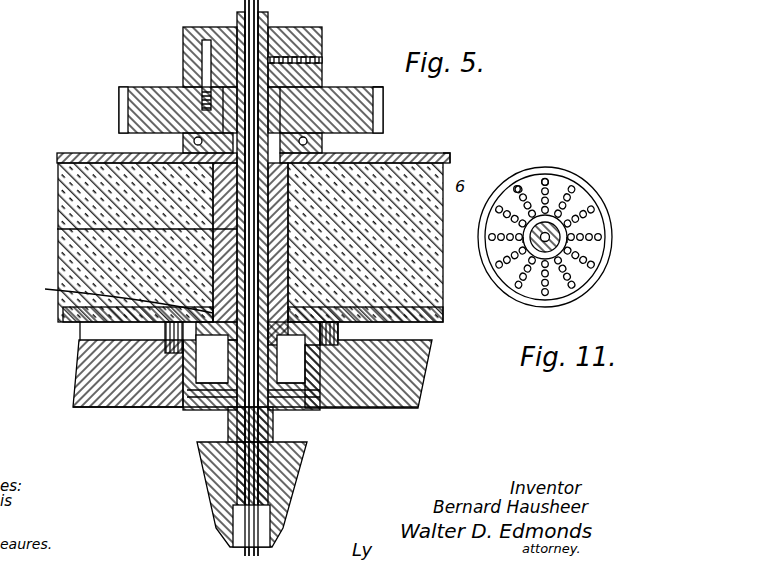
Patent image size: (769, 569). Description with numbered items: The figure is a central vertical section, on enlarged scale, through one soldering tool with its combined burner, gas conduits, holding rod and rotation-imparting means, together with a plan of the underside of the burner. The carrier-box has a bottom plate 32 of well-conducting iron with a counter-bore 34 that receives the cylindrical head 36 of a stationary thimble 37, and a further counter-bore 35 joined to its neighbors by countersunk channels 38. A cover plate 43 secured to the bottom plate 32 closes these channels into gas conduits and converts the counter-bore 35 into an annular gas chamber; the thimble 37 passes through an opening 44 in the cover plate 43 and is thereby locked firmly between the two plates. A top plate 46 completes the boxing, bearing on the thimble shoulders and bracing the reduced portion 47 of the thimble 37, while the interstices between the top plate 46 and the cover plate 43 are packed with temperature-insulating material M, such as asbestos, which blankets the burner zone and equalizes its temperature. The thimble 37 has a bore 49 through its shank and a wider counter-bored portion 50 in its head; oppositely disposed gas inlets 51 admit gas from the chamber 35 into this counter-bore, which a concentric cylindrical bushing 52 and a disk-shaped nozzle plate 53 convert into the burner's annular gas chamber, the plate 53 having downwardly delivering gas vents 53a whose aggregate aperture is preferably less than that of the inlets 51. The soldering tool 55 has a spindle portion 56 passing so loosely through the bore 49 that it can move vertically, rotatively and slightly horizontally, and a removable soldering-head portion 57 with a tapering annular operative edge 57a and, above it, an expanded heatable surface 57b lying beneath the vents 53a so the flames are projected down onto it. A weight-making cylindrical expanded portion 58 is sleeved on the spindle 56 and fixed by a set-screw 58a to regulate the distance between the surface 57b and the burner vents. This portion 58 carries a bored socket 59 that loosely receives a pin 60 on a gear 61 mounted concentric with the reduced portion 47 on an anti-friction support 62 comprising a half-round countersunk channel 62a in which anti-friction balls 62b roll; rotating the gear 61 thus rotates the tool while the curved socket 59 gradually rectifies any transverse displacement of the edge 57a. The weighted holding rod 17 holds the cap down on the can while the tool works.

In FIG. 5, the holding rod 17 is at (258, 3).
In FIG. 11, the holding rod 17 is at (542, 240).
In FIG. 5, the bottom plate 32 is at (400, 378).
In FIG. 5, the counter-bore 34 is at (320, 362).
In FIG. 5, the counter-bore 35 is at (112, 408).
In FIG. 5, the cylindrical head 36 is at (150, 410).
In FIG. 11, the cylindrical head 36 is at (588, 186).
In FIG. 5, the thimble 37 is at (288, 200).
In FIG. 5, the channel 38 is at (110, 328).
In FIG. 5, the cover plate 43 is at (62, 318).
In FIG. 5, the opening 44 is at (113, 298).
In FIG. 5, the top plate 46 is at (446, 160).
In FIG. 5, the reduced portion 47 is at (232, 160).
In FIG. 5, the bore 49 is at (268, 267).
In FIG. 11, the bore 49 is at (538, 248).
In FIG. 5, the counter-bored portion 50 is at (195, 395).
In FIG. 5, the gas inlet 51 is at (251, 366).
In FIG. 5, the cylindrical bushing 52 is at (280, 395).
In FIG. 11, the cylindrical bushing 52 is at (567, 244).
In FIG. 5, the nozzle plate 53 is at (300, 410).
In FIG. 11, the nozzle plate 53 is at (557, 178).
In FIG. 5, the gas vent 53a is at (220, 395).
In FIG. 11, the gas vent 53a is at (543, 183).
In FIG. 5, the shaft end 55 is at (435, 7).
In FIG. 5, the spindle portion 56 is at (58, 229).
In FIG. 11, the spindle portion 56 is at (552, 233).
In FIG. 5, the soldering-head portion 57 is at (288, 500).
In FIG. 5, the operative edge 57a is at (278, 543).
In FIG. 5, the heatable surface 57b is at (197, 442).
In FIG. 5, the weight-making cylindrical expanded portion 58 is at (322, 35).
In FIG. 5, the set-screw 58a is at (322, 60).
In FIG. 5, the socket 59 is at (206, 40).
In FIG. 5, the pin 60 is at (203, 56).
In FIG. 5, the gear 61 is at (150, 95).
In FIG. 5, the anti-friction support 62 is at (323, 145).
In FIG. 5, the countersunk channel 62a is at (305, 130).
In FIG. 5, the anti-friction ball 62b is at (385, 88).
In FIG. 5, the temperature-insulating material M is at (62, 214).